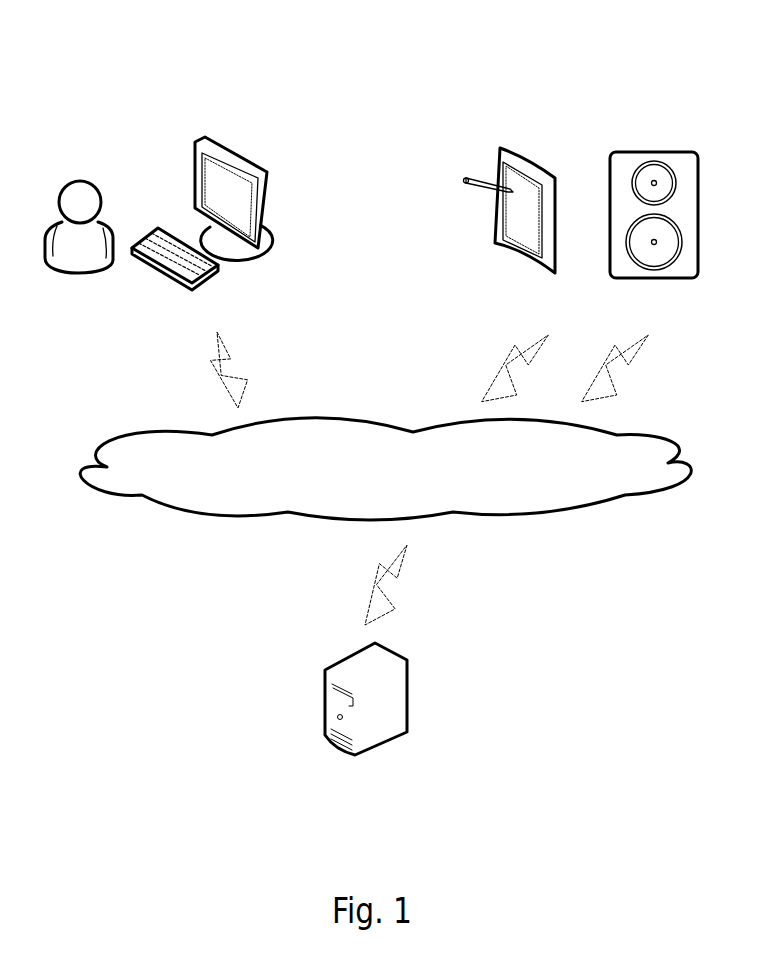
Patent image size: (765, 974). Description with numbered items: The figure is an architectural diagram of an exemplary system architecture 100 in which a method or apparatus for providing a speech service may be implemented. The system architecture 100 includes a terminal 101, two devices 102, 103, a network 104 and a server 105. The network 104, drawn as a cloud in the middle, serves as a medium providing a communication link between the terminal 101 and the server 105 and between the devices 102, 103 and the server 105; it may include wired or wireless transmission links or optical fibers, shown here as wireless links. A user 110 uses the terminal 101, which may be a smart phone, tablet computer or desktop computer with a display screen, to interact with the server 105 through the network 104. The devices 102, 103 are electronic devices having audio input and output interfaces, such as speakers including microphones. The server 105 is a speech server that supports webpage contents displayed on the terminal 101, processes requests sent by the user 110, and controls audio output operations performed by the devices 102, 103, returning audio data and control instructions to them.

The system architecture 100 is at (612, 46).
The user 110 is at (79, 249).
The terminal 101 is at (204, 227).
The device 102 is at (510, 232).
The device 103 is at (654, 234).
The network 104 is at (385, 469).
The server 105 is at (366, 728).